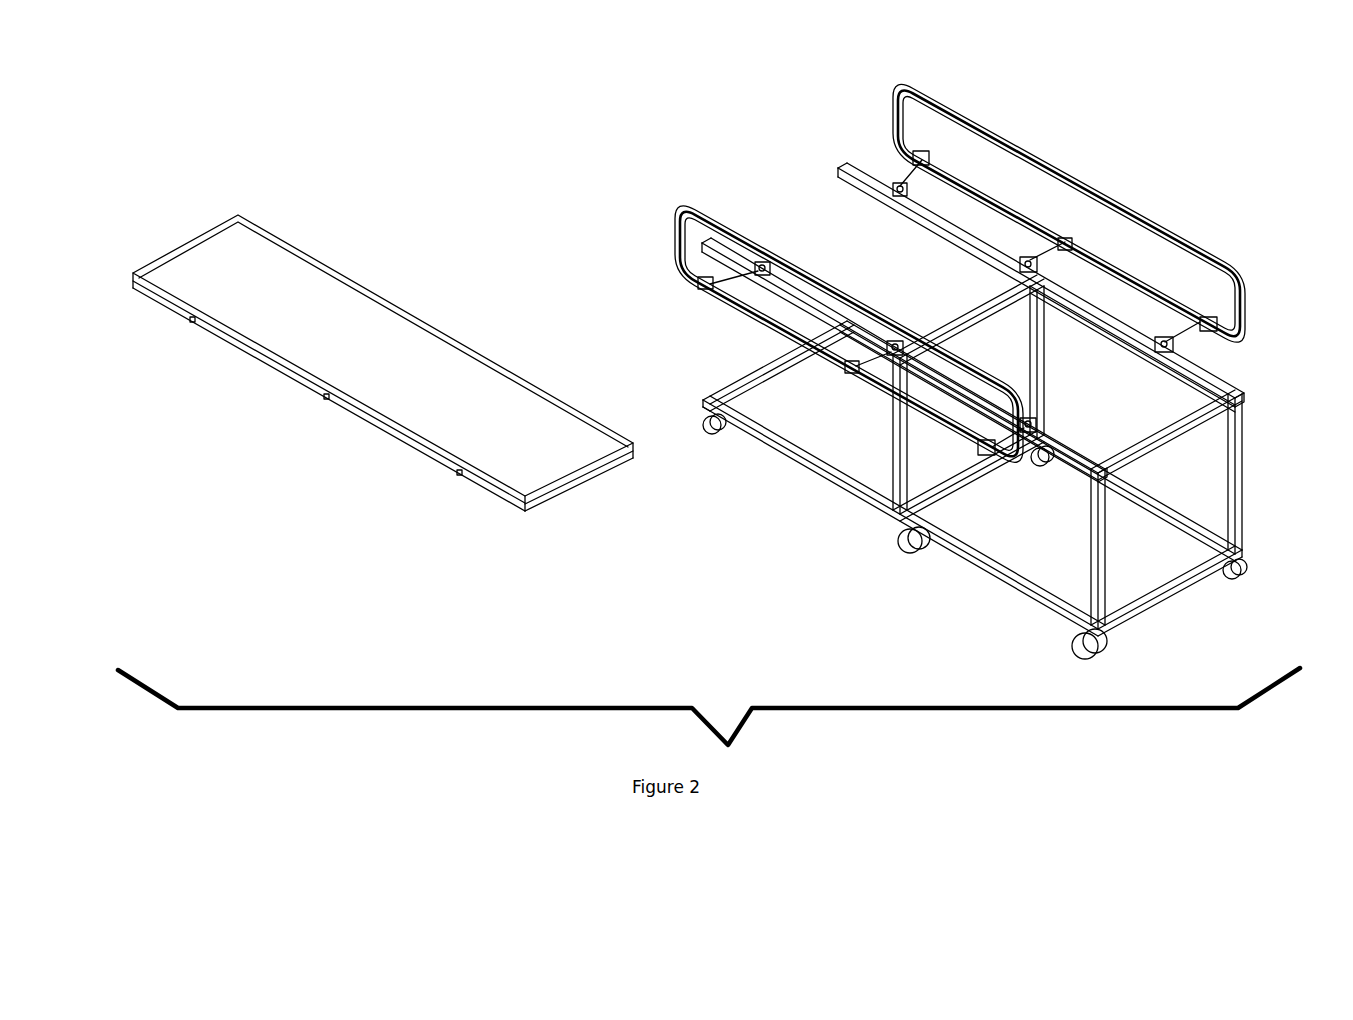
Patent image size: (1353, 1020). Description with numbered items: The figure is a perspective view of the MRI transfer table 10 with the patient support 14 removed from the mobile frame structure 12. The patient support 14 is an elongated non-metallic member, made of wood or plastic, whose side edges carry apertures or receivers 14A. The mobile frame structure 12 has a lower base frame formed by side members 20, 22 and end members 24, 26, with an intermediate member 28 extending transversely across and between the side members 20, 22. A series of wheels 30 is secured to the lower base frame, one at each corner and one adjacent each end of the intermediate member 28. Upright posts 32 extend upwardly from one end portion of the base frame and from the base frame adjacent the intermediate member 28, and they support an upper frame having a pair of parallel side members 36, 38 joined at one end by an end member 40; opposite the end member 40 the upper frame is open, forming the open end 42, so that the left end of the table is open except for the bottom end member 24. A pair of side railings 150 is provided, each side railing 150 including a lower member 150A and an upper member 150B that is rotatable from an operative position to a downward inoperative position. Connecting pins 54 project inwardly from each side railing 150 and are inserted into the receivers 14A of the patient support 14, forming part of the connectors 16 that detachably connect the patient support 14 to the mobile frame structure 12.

The MRI transfer table 10 is at (1082, 127).
The mobile frame structure 12 is at (1262, 466).
The patient support 14 is at (383, 362).
The apertures or receivers 14A is at (457, 478).
The connectors 16 is at (1136, 366).
The side member 20 is at (976, 569).
The side member 22 is at (1173, 528).
The end member 24 is at (714, 376).
The end member 26 is at (1182, 590).
The intermediate member 28 is at (974, 489).
The wheels 30 is at (1070, 653).
The upright posts 32 is at (1044, 333).
The side member 36 is at (1215, 379).
The side member 38 is at (1062, 467).
The end member 40 is at (1180, 426).
The open end 42 is at (747, 183).
The connecting pins 54 is at (1018, 266).
The side railing 150 is at (935, 55).
The lower member 150A is at (1012, 218).
The upper member 150B is at (1000, 138).